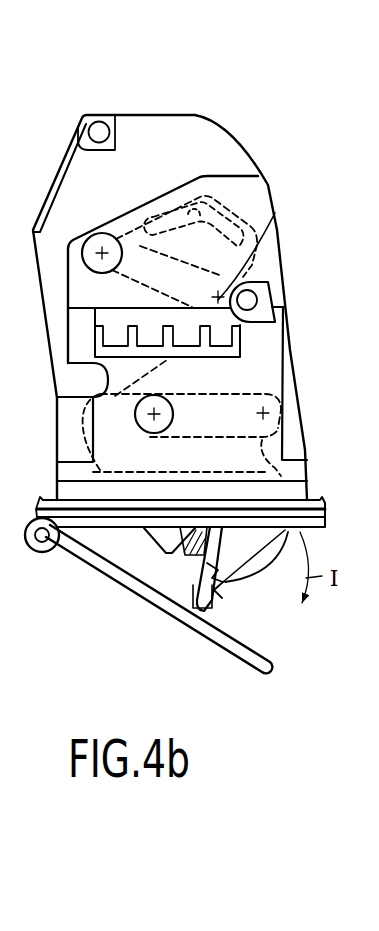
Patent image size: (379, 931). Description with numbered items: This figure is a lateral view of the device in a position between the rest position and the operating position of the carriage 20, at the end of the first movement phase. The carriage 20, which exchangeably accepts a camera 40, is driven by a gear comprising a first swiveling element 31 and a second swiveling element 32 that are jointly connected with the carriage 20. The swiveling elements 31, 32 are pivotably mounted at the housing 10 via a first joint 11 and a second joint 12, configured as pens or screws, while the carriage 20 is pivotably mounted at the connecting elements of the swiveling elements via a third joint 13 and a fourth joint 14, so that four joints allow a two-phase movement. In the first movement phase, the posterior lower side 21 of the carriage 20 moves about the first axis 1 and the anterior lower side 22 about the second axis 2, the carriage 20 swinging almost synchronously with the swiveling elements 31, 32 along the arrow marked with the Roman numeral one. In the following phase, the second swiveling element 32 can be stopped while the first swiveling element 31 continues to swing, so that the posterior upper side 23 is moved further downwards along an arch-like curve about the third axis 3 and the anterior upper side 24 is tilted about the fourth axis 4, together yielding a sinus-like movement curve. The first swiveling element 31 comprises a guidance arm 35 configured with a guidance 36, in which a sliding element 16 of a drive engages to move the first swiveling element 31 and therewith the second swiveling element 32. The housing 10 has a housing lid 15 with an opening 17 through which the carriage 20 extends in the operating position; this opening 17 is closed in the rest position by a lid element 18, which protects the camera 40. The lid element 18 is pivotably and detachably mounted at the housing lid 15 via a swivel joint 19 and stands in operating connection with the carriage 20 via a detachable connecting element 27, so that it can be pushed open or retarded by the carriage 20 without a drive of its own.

The first axis 1 is at (100, 252).
The second axis 2 is at (152, 415).
The third axis 3 is at (275, 213).
The fourth axis 4 is at (265, 417).
The housing 10 is at (97, 183).
The first joint 11 is at (102, 237).
The second joint 12 is at (148, 410).
The third joint 13 is at (243, 275).
The fourth joint 14 is at (290, 402).
The housing lid 15 is at (334, 510).
The sliding element 16 is at (195, 215).
The opening 17 is at (271, 596).
The lid element 18 is at (103, 567).
The swivel joint 19 is at (32, 547).
The carriage 20 is at (164, 552).
The posterior lower side 21 is at (250, 300).
The anterior lower side 22 is at (270, 448).
The posterior upper side 23 is at (75, 418).
The anterior upper side 24 is at (147, 545).
The detachable connecting element 27 is at (229, 586).
The first swiveling element 31 is at (135, 257).
The second swiveling element 32 is at (200, 415).
The guidance arm 35 is at (240, 227).
The guidance 36 is at (215, 222).
The camera 40 is at (240, 578).